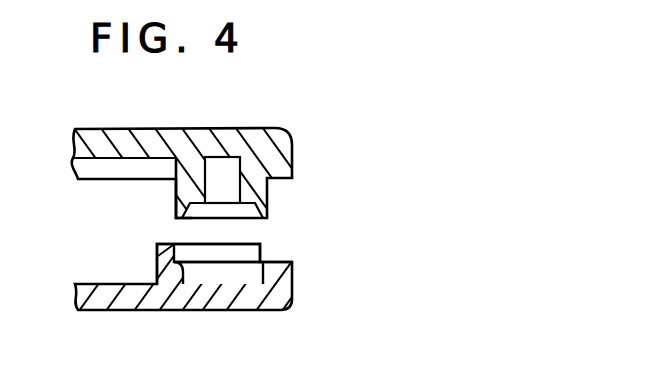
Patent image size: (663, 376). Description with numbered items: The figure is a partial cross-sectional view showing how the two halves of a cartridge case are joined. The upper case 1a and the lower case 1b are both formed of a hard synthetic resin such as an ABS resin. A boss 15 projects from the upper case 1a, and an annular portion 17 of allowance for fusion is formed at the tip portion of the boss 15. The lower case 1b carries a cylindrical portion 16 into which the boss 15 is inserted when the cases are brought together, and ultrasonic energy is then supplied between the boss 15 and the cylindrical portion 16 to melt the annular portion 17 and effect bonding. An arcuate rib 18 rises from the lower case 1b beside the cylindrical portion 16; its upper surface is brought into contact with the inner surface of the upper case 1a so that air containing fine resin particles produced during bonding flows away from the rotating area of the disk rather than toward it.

The upper case 1a is at (233, 141).
The lower case 1b is at (218, 300).
The boss 15 is at (184, 184).
The cylindrical portion 16 is at (278, 275).
The annular portion of allowance for fusion 17 is at (258, 204).
The arcuate rib 18 is at (166, 252).